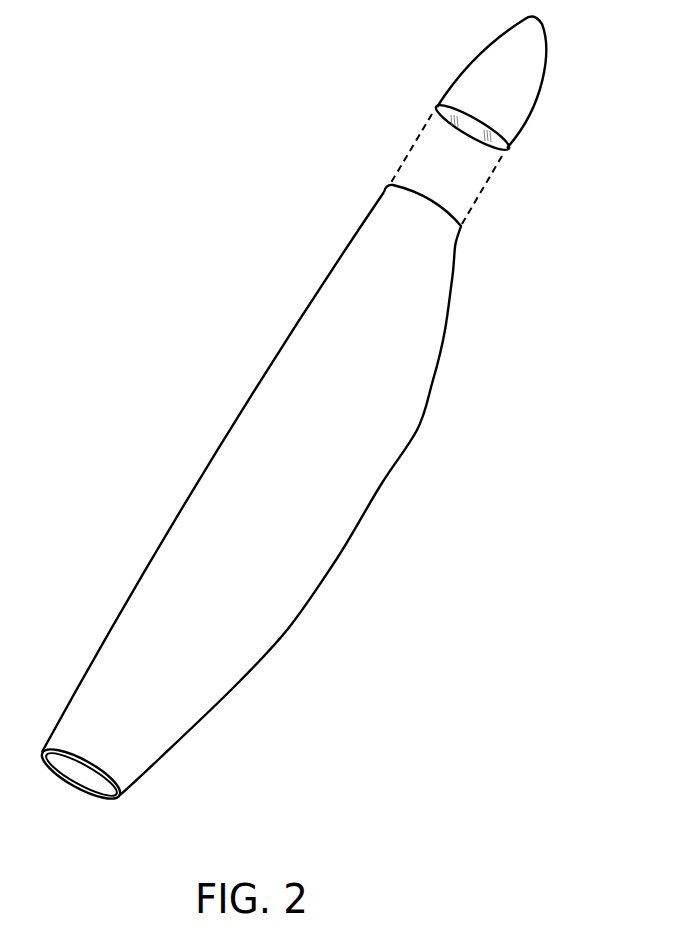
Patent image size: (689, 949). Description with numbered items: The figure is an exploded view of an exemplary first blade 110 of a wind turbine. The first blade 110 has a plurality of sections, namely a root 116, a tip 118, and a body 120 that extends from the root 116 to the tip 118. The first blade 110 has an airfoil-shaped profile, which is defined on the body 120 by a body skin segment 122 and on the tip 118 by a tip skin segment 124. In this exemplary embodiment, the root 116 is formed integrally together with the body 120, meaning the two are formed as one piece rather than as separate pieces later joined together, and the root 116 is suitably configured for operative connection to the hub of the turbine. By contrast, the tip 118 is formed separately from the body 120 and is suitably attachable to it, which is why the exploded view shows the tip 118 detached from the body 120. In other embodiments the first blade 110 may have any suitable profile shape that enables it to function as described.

The first blade 110 is at (203, 115).
The root 116 is at (120, 796).
The tip 118 is at (540, 89).
The body 120 is at (385, 473).
The body skin segment 122 is at (234, 481).
The tip skin segment 124 is at (490, 75).